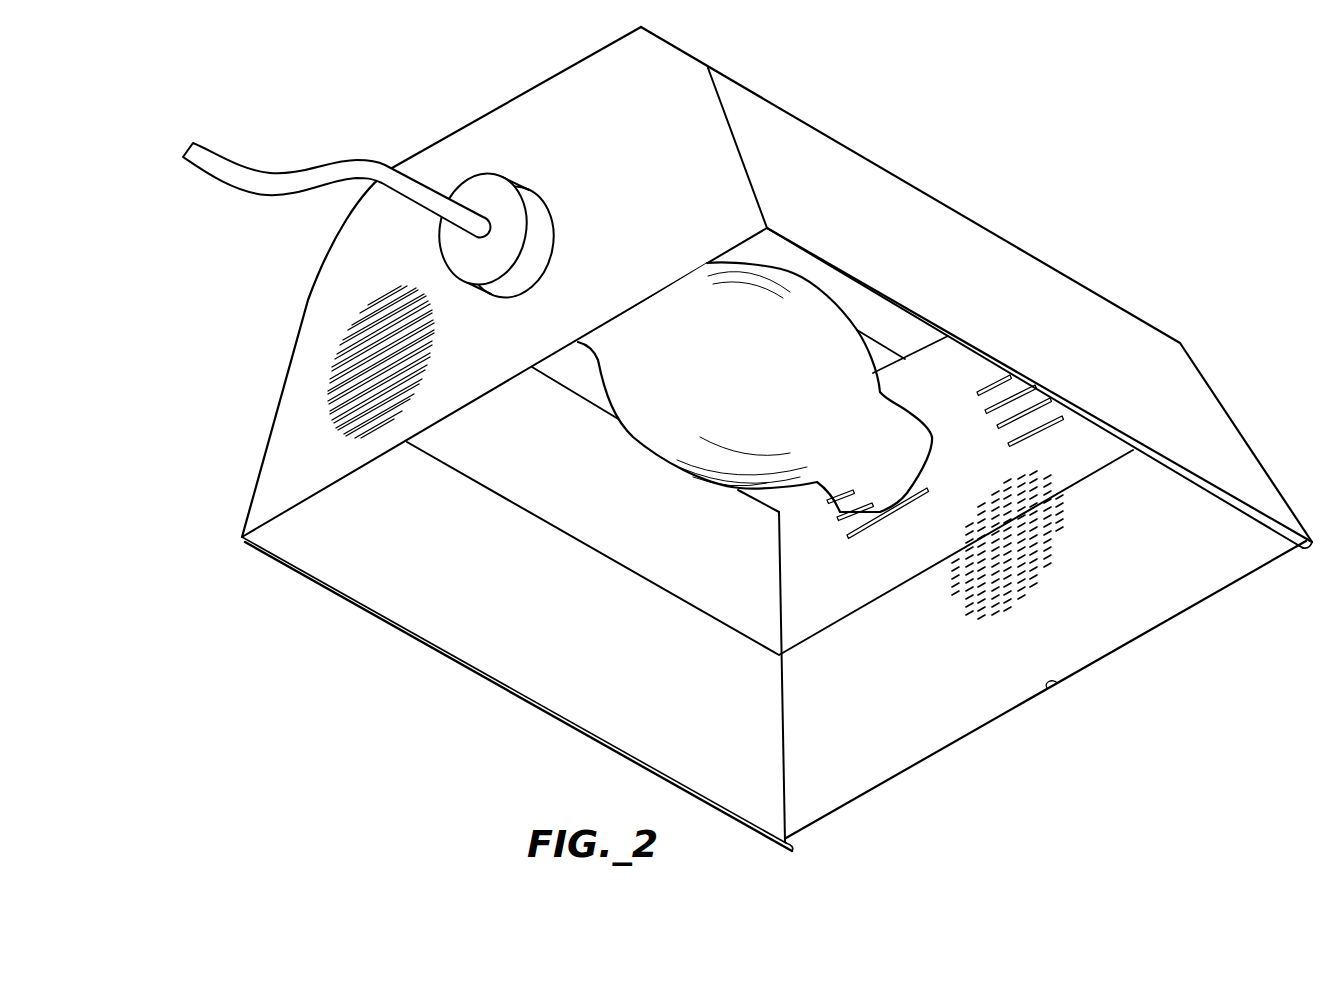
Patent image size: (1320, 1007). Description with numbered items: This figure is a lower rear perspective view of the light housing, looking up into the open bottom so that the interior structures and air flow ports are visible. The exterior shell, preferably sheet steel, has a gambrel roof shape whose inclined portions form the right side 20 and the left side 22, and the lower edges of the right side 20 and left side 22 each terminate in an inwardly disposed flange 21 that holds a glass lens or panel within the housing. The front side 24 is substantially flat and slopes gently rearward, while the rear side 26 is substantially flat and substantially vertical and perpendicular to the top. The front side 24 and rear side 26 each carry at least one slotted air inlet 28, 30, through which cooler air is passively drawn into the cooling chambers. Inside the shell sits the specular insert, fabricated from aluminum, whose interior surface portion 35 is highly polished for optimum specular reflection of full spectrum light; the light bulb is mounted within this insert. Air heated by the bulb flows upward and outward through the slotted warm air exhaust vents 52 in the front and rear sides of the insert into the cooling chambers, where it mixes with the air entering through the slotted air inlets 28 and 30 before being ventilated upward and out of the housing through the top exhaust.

The right side 20 is at (746, 454).
The inwardly disposed flange 21 is at (1210, 492).
The left side 22 is at (1067, 294).
The front side 24 is at (1178, 628).
The rear side 26 is at (412, 282).
The slotted air inlet 28 is at (975, 600).
The slotted air inlet 30 is at (338, 418).
The interior surface portion 35 is at (530, 458).
The slotted warm air exhaust vents 52 is at (987, 410).